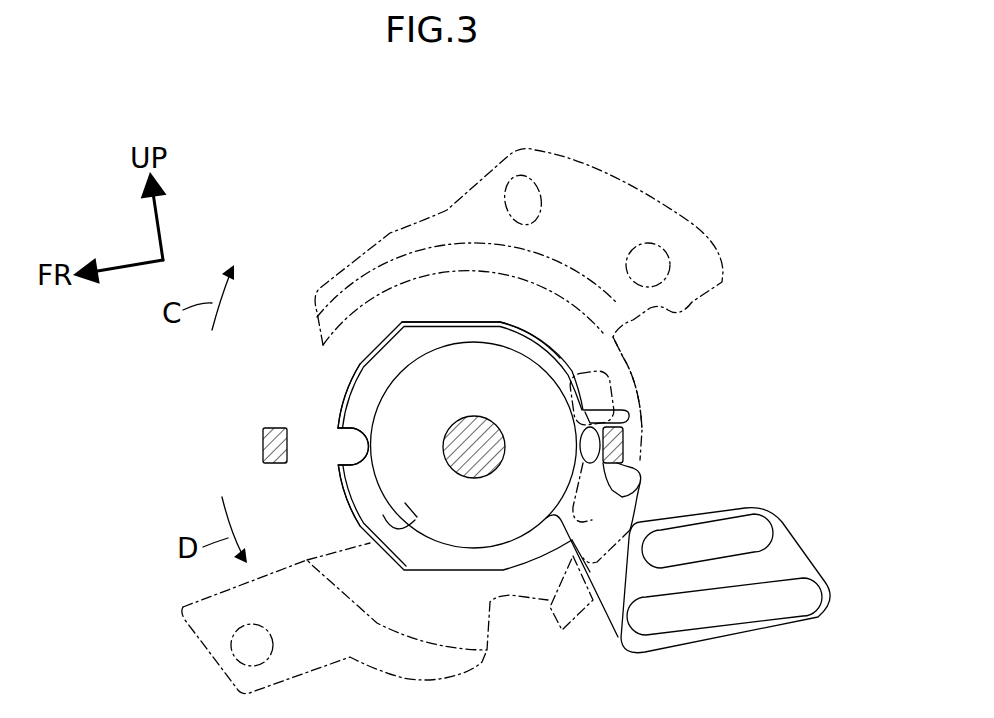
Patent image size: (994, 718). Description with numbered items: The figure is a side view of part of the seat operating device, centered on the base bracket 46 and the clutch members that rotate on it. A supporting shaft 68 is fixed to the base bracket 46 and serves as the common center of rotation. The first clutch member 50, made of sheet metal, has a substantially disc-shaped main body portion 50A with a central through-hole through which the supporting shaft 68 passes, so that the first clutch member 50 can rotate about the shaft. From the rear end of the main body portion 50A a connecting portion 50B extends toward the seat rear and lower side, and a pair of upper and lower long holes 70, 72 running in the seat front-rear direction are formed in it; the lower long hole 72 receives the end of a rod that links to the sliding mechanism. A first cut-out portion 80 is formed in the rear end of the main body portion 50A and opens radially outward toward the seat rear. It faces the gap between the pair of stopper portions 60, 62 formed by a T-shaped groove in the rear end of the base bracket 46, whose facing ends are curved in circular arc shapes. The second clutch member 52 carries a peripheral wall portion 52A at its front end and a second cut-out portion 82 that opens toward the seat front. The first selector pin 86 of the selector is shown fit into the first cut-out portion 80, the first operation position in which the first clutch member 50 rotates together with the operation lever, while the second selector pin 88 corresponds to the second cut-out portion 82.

The base bracket 46 is at (580, 157).
The first clutch member 50 is at (506, 552).
The main body portion 50A is at (500, 330).
The connecting portion 50B is at (803, 552).
The second clutch member 52 is at (443, 312).
The peripheral wall portion 52A is at (337, 407).
The stopper portion 60 is at (625, 356).
The stopper portion 62 is at (643, 487).
The supporting shaft 68 is at (457, 420).
The long hole 70 is at (752, 520).
The long hole 72 is at (709, 608).
The first cut-out portion 80 is at (580, 440).
The second cut-out portion 82 is at (340, 462).
The first selector pin 86 is at (625, 448).
The second selector pin 88 is at (263, 445).